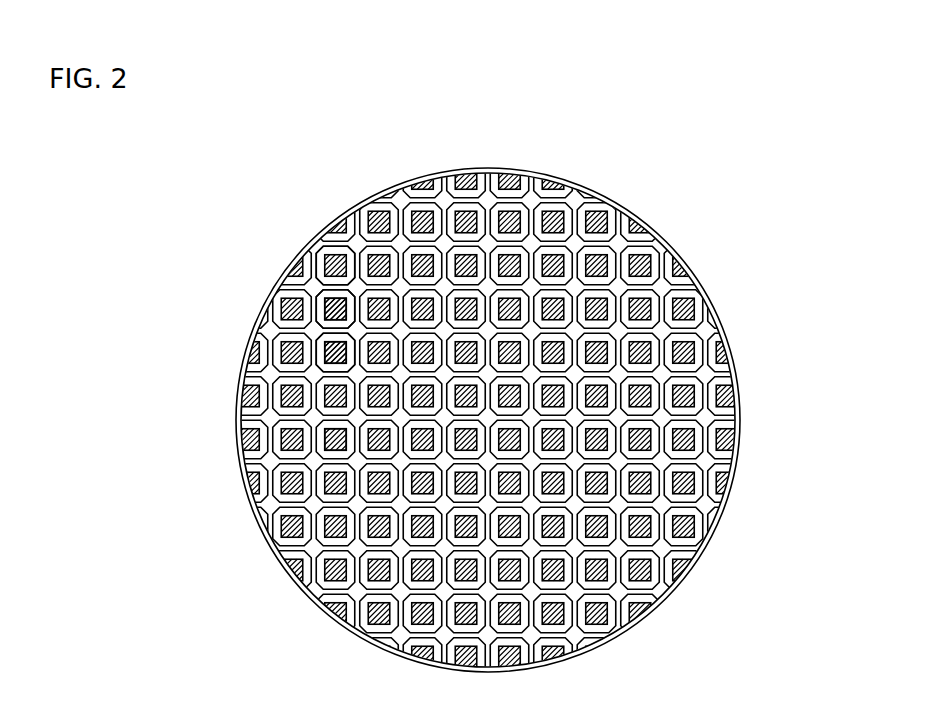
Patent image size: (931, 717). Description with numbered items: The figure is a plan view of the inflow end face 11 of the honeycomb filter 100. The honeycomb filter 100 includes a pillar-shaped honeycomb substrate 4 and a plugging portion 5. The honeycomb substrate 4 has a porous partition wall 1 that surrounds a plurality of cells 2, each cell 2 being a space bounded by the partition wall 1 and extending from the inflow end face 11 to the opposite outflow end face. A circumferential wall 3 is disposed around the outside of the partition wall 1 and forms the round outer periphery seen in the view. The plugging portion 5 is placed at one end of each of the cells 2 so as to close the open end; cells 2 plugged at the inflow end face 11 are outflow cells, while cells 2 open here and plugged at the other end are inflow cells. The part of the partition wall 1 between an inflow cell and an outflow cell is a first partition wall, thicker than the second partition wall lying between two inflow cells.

The honeycomb filter 100 is at (799, 122).
The inflow end face 11 is at (440, 155).
The partition wall 1 is at (352, 240).
The cell 2 is at (333, 290).
The circumferential wall 3 is at (727, 506).
The honeycomb substrate 4 is at (678, 250).
The plugging portion 5 is at (327, 433).